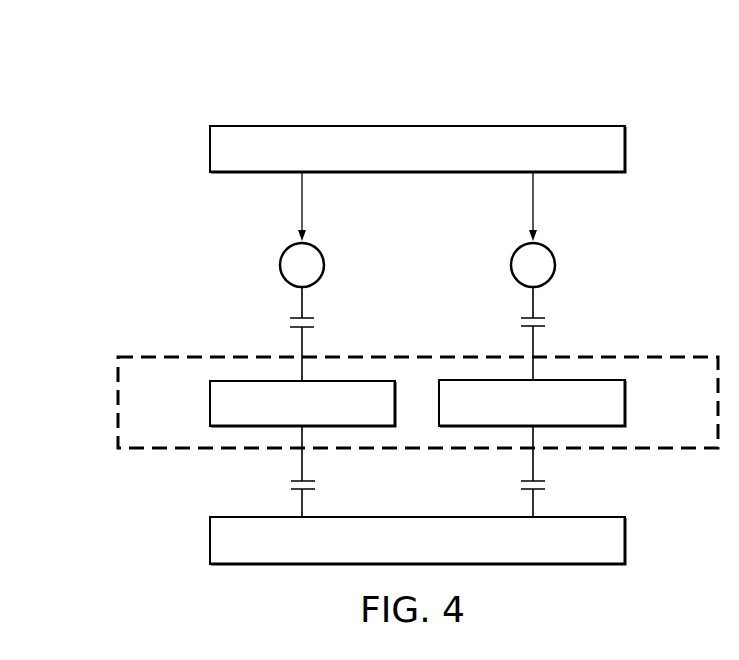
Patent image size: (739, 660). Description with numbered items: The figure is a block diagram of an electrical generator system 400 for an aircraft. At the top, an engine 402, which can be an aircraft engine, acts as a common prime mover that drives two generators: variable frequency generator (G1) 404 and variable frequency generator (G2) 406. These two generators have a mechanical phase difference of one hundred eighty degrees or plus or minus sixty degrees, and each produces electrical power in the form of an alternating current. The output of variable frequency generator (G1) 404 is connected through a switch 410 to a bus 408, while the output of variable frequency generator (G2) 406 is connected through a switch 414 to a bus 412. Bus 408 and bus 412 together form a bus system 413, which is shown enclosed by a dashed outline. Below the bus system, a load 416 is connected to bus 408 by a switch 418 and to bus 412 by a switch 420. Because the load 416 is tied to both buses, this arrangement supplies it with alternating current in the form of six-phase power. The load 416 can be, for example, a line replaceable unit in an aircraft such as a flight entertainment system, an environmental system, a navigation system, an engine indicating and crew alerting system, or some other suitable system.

The electrical generator system 400 is at (311, 74).
The engine 402 is at (210, 150).
The variable frequency generator (G1) 404 is at (280, 262).
The variable frequency generator (G2) 406 is at (556, 264).
The bus 408 is at (210, 401).
The switch 410 is at (290, 321).
The bus 412 is at (626, 401).
The bus system 413 is at (110, 420).
The switch 414 is at (547, 323).
The load 416 is at (210, 542).
The switch 418 is at (290, 484).
The switch 420 is at (547, 484).